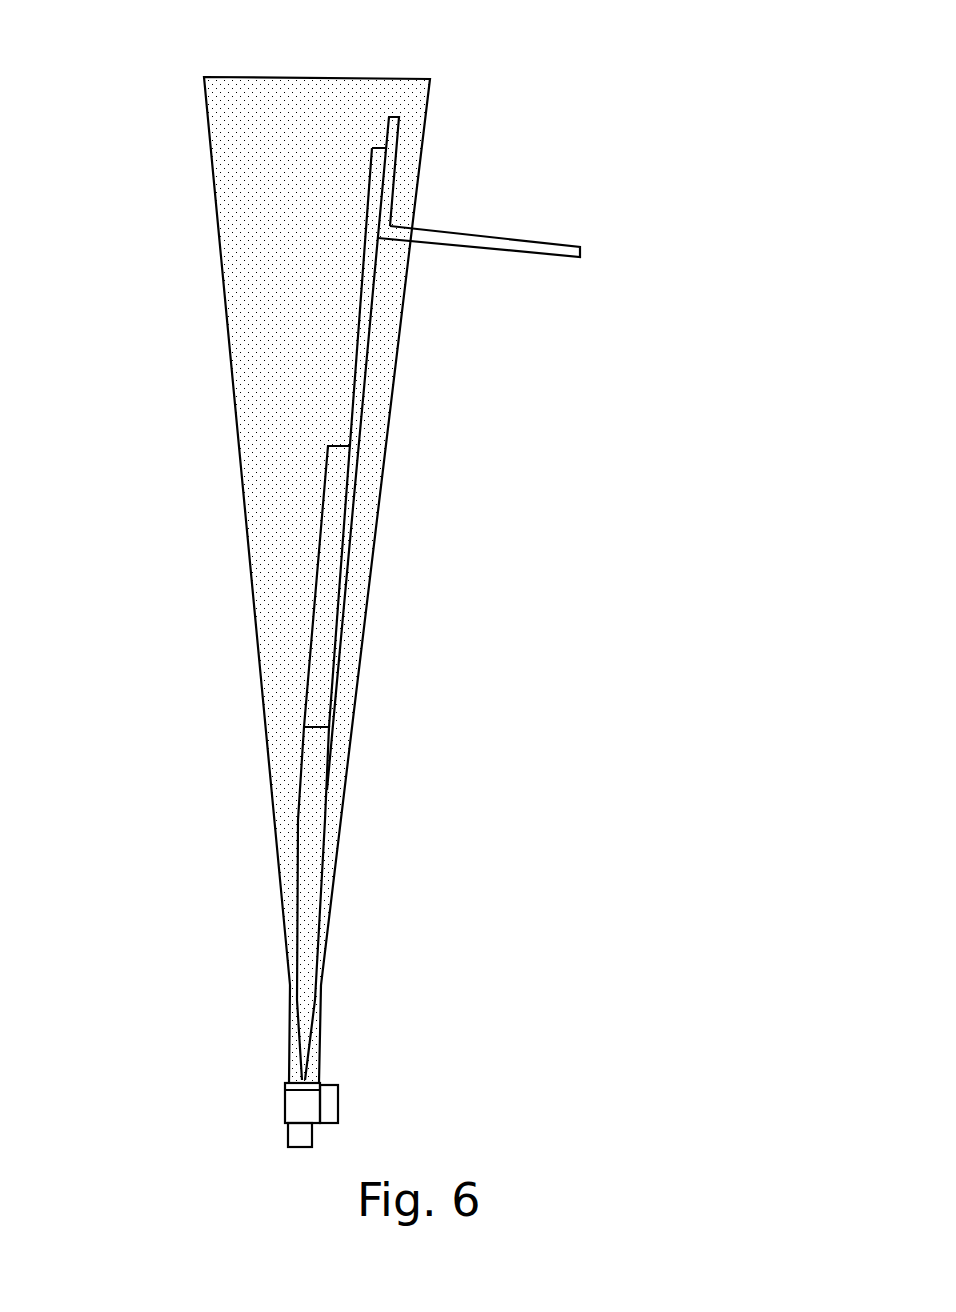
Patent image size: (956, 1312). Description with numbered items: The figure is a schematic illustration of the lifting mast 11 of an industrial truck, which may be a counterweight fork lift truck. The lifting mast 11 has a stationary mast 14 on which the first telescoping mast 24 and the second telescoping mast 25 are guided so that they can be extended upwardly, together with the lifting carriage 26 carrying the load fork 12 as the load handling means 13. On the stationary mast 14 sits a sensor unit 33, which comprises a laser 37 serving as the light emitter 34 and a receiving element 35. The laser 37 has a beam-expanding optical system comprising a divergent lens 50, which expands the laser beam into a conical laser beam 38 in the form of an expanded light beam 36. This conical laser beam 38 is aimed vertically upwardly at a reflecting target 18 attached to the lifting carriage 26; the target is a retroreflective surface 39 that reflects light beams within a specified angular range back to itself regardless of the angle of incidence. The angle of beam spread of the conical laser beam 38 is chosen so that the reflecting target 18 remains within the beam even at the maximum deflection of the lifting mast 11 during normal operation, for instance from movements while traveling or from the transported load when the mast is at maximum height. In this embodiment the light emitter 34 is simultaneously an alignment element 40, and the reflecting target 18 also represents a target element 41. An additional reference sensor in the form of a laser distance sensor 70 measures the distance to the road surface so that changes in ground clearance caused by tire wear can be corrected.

The lifting mast 11 is at (160, 197).
The reflecting target 18 is at (412, 121).
The retroreflective surface 39 is at (412, 121).
The target element 41 is at (382, 117).
The lifting carriage 26 is at (398, 152).
The load fork 12 is at (500, 216).
The load handling means 13 is at (547, 241).
The second telescoping mast 25 is at (355, 351).
The first telescoping mast 24 is at (340, 495).
The expanded light beam 36 is at (283, 580).
The conical laser beam 38 is at (262, 660).
The stationary mast 14 is at (312, 863).
The divergent lens 50 is at (285, 1083).
The sensor unit 33 is at (214, 1100).
The light emitter 34 is at (214, 1100).
The receiving element 35 is at (214, 1100).
The laser 37 is at (214, 1100).
The alignment element 40 is at (302, 1097).
The laser distance sensor 70 is at (340, 1104).